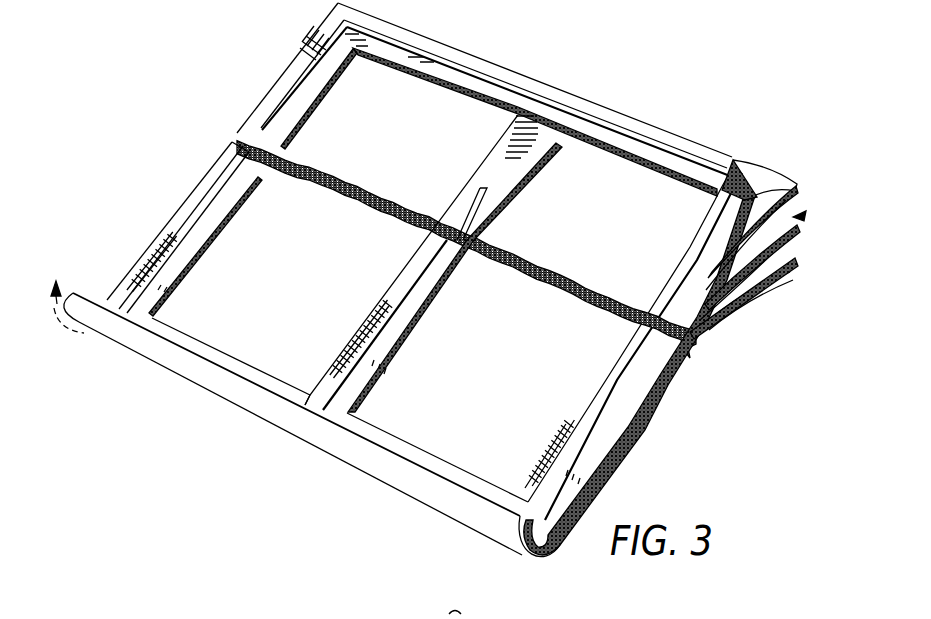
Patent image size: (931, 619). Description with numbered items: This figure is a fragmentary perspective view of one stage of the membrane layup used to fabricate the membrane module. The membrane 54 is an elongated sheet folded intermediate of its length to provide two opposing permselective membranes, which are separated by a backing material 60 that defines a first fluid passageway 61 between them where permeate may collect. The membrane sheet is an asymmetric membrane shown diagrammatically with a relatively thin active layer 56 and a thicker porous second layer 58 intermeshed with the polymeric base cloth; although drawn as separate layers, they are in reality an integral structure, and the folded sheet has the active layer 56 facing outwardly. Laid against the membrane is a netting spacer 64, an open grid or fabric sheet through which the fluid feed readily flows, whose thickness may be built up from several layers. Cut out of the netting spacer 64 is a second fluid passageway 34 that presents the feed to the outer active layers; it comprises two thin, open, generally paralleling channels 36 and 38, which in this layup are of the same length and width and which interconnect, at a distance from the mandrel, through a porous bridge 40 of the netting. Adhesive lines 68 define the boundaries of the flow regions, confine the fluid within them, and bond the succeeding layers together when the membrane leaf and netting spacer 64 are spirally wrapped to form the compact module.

The second fluid passageway 34 is at (550, 432).
The channel 36 is at (605, 350).
The channel 38 is at (337, 117).
The porous bridge 40 is at (510, 182).
The membrane 54 is at (795, 178).
The active layer 56 is at (752, 175).
The porous second layer 58 is at (793, 203).
The backing material 60 is at (797, 230).
The first fluid passageway 61 is at (800, 217).
The netting spacer 64 is at (628, 122).
The adhesive lines 68 is at (207, 195).